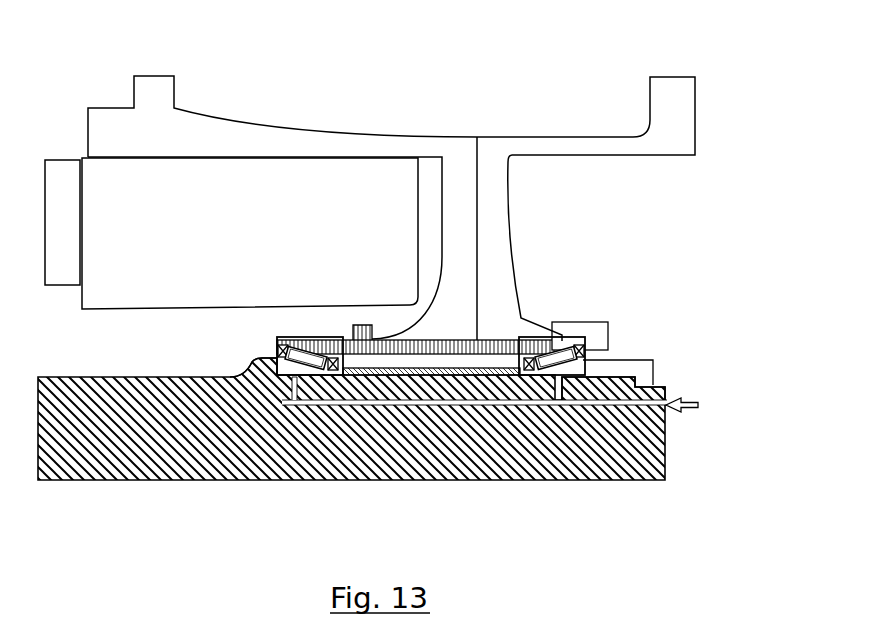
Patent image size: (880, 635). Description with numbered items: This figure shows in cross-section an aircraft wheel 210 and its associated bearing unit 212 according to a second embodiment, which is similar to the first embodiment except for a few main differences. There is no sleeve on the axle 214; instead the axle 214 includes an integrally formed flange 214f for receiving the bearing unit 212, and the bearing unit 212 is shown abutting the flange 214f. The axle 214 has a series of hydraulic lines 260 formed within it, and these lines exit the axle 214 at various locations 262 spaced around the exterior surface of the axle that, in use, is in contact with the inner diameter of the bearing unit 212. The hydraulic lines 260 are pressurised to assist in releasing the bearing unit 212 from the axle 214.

The wheel 210 is at (506, 110).
The bearing unit 212 is at (487, 315).
The axle 214 is at (133, 470).
The flange 214f is at (257, 373).
The hydraulic lines 260 is at (605, 402).
The locations 262 is at (567, 349).